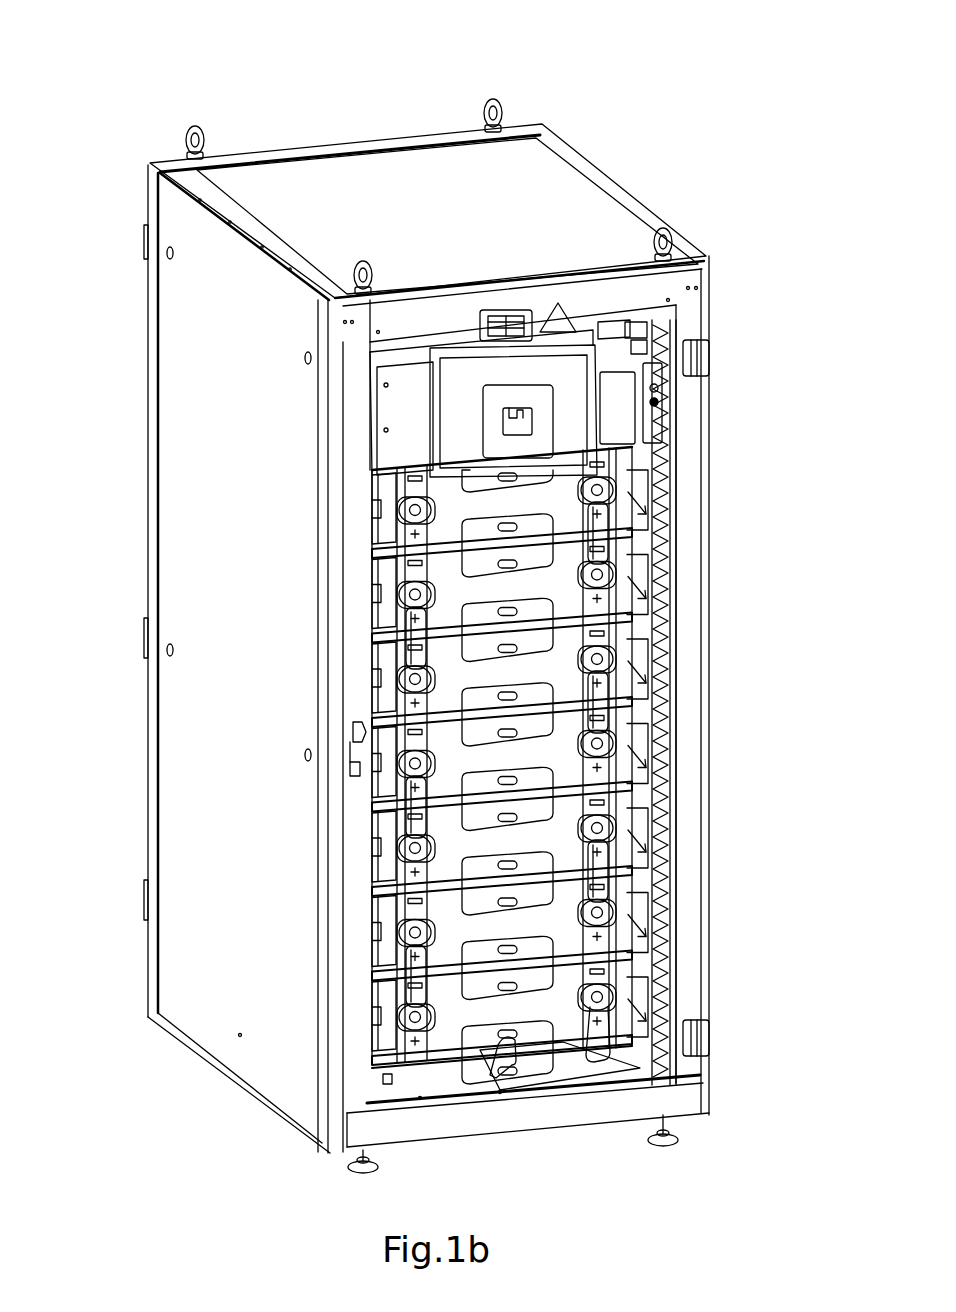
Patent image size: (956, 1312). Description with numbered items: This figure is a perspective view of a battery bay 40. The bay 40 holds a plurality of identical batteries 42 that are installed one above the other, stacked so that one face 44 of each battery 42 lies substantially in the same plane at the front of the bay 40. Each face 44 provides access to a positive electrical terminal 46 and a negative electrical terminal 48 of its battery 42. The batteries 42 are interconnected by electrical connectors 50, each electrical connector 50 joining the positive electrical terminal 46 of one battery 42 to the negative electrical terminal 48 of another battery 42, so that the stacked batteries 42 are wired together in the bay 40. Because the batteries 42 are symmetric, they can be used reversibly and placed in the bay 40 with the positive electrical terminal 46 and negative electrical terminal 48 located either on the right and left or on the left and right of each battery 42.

The bay 40 is at (437, 592).
The battery 42 is at (447, 748).
The face 44 is at (560, 582).
The positive electrical terminal 46 is at (597, 894).
The negative electrical terminal 48 is at (400, 953).
The electrical connector 50 is at (420, 822).